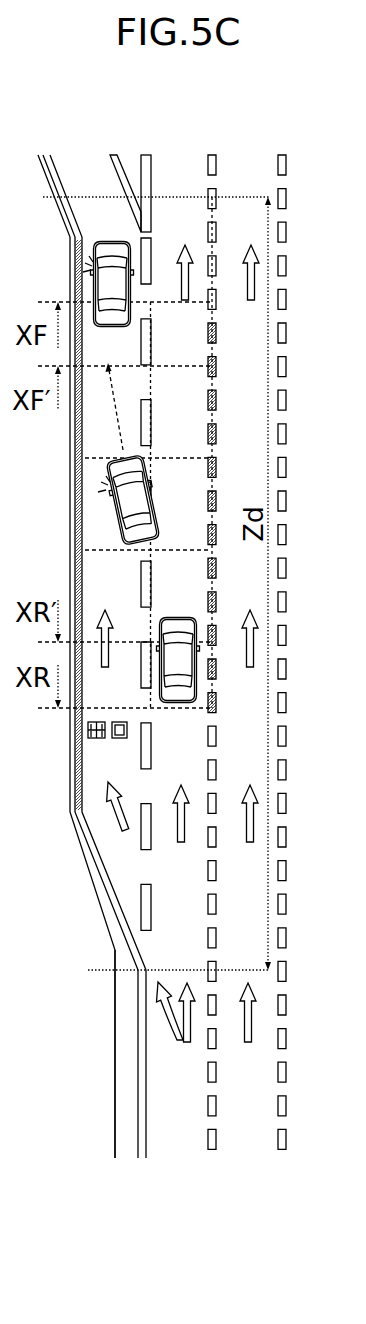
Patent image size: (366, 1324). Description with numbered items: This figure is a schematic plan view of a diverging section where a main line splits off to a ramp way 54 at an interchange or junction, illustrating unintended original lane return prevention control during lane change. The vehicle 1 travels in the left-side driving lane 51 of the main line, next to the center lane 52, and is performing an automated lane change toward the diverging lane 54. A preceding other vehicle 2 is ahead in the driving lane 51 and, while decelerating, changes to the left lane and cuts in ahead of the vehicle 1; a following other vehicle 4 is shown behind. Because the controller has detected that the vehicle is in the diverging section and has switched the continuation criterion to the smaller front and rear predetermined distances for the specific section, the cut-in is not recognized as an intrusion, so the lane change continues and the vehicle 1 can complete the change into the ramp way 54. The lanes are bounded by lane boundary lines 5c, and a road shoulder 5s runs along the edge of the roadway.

The ramp way 54 is at (82, 170).
The preceding other vehicle 2 is at (130, 282).
The vehicle 1 is at (157, 512).
The following other vehicle 4 is at (197, 683).
The road shoulder 5s is at (133, 1143).
The driving lane 51 is at (175, 1153).
The lane boundary line 5c is at (207, 1147).
The center lane 52 is at (243, 1153).